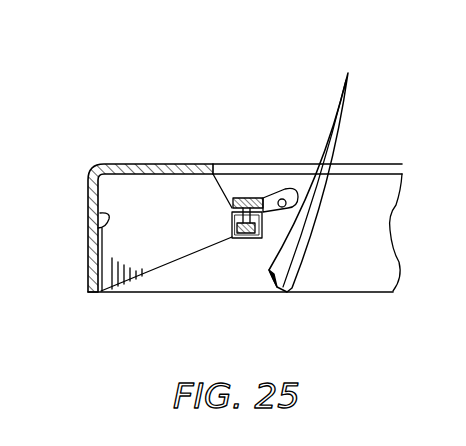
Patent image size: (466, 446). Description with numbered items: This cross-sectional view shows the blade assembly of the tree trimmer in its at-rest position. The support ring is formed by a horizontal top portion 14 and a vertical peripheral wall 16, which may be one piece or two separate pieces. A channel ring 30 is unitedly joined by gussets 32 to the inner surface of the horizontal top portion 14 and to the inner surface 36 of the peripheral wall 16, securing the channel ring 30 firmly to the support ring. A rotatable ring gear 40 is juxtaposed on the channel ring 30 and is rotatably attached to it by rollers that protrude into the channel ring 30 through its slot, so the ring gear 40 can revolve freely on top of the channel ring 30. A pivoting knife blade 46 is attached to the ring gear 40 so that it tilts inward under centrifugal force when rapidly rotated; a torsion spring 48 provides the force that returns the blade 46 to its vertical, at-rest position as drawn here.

The horizontal top portion 14 is at (170, 163).
The vertical peripheral wall 16 is at (87, 189).
The channel ring 30 is at (237, 240).
The gussets 32 is at (147, 273).
The inner surface of the peripheral wall 36 is at (100, 213).
The rotatable ring gear 40 is at (241, 196).
The pivoting knife blades 46 is at (330, 197).
The torsion springs 48 is at (292, 190).